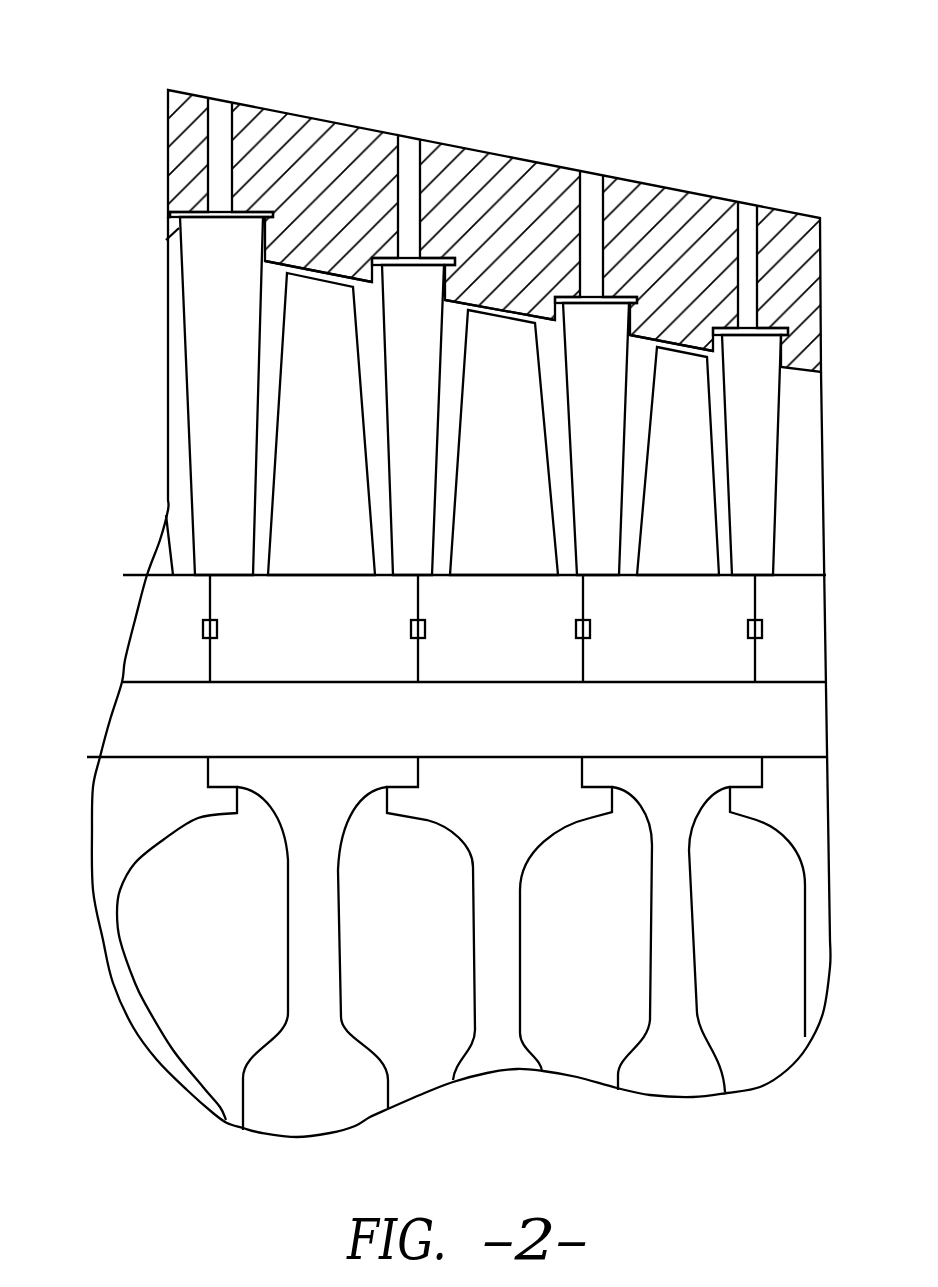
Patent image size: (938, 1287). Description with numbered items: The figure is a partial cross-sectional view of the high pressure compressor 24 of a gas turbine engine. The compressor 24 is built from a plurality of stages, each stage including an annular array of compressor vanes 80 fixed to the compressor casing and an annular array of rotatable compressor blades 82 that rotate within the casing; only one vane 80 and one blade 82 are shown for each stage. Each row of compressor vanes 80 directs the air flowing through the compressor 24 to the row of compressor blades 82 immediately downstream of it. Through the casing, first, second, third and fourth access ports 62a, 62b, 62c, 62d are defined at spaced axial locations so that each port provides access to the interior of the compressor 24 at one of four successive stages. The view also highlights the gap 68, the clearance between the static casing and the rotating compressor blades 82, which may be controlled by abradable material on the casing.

The high pressure compressor 24 is at (108, 118).
The first access port 62a is at (218, 88).
The second access port 62b is at (408, 128).
The third access port 62c is at (592, 163).
The fourth access port 62d is at (748, 194).
The gap 68 is at (314, 272).
The compressor vane 80 is at (238, 314).
The compressor blade 82 is at (342, 463).